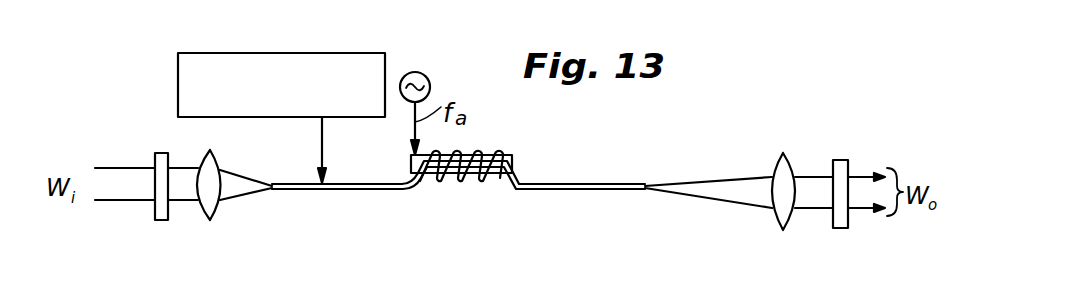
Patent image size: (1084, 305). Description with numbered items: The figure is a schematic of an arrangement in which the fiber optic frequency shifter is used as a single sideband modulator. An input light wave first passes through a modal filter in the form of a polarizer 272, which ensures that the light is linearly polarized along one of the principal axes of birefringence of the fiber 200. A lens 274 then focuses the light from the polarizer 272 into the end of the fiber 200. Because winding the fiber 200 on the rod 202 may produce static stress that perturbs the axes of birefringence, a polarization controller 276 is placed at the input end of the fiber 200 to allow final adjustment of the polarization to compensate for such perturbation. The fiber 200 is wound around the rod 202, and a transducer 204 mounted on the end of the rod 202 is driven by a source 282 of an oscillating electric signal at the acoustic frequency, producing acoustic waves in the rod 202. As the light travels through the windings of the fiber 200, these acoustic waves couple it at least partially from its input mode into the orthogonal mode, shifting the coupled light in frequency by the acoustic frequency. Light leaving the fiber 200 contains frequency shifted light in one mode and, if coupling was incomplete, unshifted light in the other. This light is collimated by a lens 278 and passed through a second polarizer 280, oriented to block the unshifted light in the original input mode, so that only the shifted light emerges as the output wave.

The fiber 200 is at (413, 191).
The rod 202 is at (512, 157).
The transducer 204 is at (410, 163).
The polarizer 272 is at (163, 221).
The lens 274 is at (213, 201).
The polarization controller 276 is at (316, 53).
The lens 278 is at (777, 165).
The polarizer 280 is at (870, 132).
The source 282 is at (424, 75).